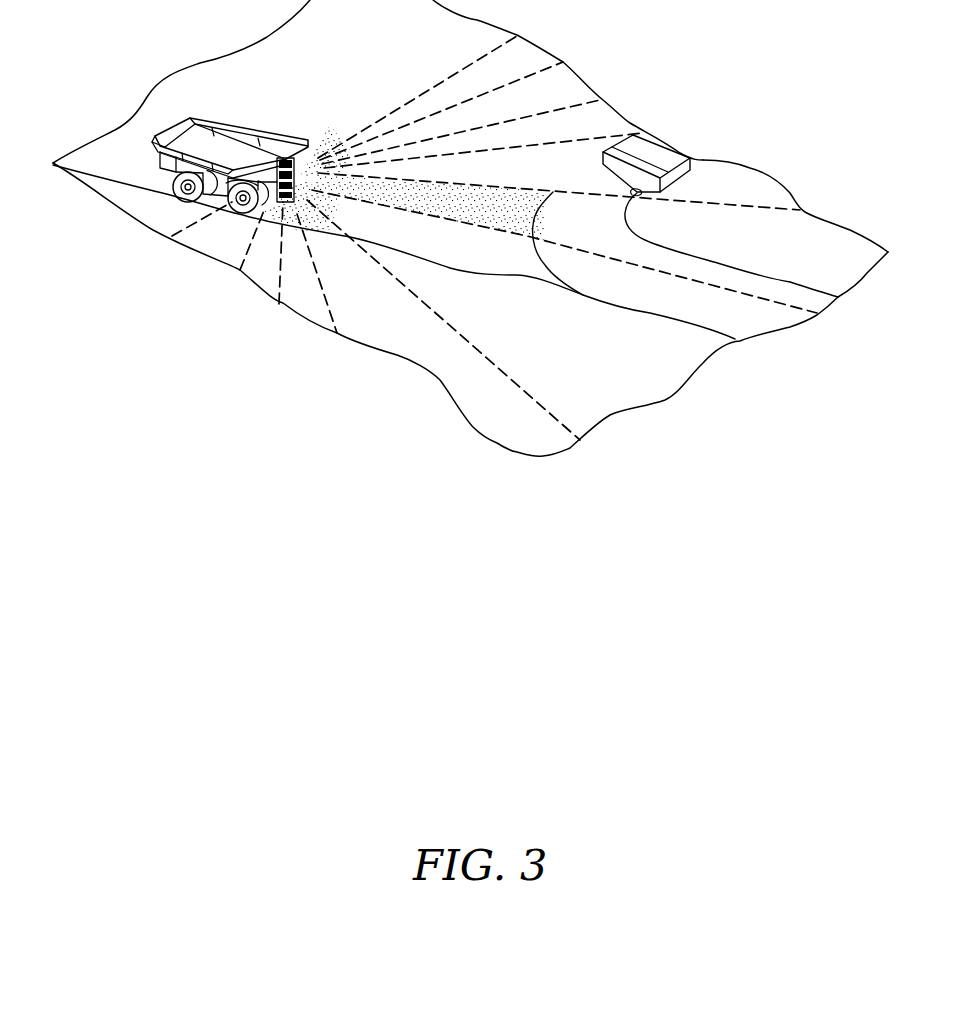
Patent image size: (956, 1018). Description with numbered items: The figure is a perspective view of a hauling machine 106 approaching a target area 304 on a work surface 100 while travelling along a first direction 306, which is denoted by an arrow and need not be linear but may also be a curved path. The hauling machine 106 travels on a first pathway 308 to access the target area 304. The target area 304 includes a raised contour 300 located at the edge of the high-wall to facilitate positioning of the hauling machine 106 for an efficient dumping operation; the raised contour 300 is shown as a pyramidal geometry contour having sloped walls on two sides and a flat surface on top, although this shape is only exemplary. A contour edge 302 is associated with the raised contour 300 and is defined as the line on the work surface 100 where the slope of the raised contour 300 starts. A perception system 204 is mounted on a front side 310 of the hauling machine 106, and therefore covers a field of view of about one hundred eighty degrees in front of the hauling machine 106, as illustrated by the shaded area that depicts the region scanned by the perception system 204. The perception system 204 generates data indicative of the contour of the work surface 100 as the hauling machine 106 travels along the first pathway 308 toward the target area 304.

The work surface 100 is at (751, 118).
The hauling machine 106 is at (239, 128).
The perception system 204 is at (294, 163).
The raised contour 300 is at (647, 192).
The contour edge 302 is at (652, 192).
The target area 304 is at (672, 172).
The first direction 306 is at (154, 159).
The first pathway 308 is at (157, 127).
The front side 310 is at (298, 195).